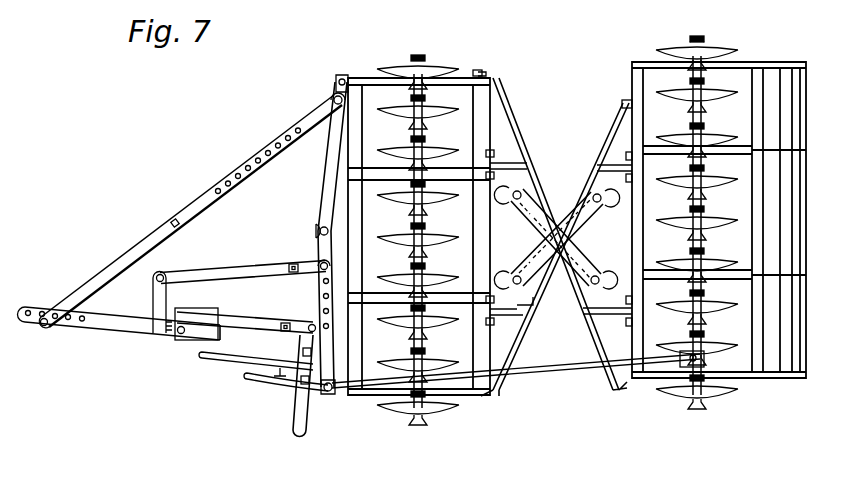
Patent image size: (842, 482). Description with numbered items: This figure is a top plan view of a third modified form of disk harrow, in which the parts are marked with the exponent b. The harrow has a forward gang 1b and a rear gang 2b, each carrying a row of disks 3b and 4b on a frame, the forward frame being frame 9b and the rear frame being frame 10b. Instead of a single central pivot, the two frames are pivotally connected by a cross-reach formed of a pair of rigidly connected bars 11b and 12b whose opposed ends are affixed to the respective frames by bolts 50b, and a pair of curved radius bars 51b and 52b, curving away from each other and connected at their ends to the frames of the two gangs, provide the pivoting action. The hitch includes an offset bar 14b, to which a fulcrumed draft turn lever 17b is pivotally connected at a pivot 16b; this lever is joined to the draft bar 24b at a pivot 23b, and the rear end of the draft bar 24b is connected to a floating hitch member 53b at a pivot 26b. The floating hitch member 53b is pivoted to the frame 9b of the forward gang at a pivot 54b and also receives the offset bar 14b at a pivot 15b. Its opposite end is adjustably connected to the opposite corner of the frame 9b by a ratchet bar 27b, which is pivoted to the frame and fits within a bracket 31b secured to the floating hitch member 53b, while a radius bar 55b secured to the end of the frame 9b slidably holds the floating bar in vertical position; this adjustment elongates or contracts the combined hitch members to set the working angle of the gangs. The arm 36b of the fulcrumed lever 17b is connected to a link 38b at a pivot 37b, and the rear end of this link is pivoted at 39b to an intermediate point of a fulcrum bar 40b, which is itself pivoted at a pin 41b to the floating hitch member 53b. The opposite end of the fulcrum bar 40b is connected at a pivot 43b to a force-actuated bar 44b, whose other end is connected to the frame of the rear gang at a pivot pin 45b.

The forward gang 1b is at (483, 72).
The rear gang 2b is at (787, 50).
The front disc gang 3b is at (432, 68).
The rear disc gang 4b is at (718, 50).
The frame of the forward gang 9b is at (483, 100).
The frame of the rear gang 10b is at (772, 373).
The cross-reach bar 11b is at (527, 267).
The cross-reach bar 12b is at (544, 222).
The offset bar 14b is at (214, 182).
The pivot 15b is at (333, 100).
The pivot 16b is at (45, 330).
The fulcrumed draft turn lever 17b is at (104, 338).
The pivot 23b is at (178, 334).
The draft bar 24b is at (200, 340).
The pivot 26b is at (303, 338).
The ratchet bar 27b is at (232, 363).
The bracket 31b is at (291, 405).
The arm 36b is at (152, 300).
The pivot 37b is at (163, 275).
The link 38b is at (243, 270).
The pivot 39b is at (319, 264).
The fulcrum bar 40b is at (334, 350).
The pin 41b is at (318, 228).
The pivot 43b is at (331, 397).
The force-actuated bar 44b is at (560, 375).
The pivot pin 45b is at (692, 362).
The bolts 50b is at (526, 192).
The curved radius bar 51b is at (513, 128).
The curved radius bar 52b is at (606, 136).
The floating hitch member 53b is at (300, 316).
The pivot 54b is at (342, 75).
The radius bar 55b is at (263, 389).